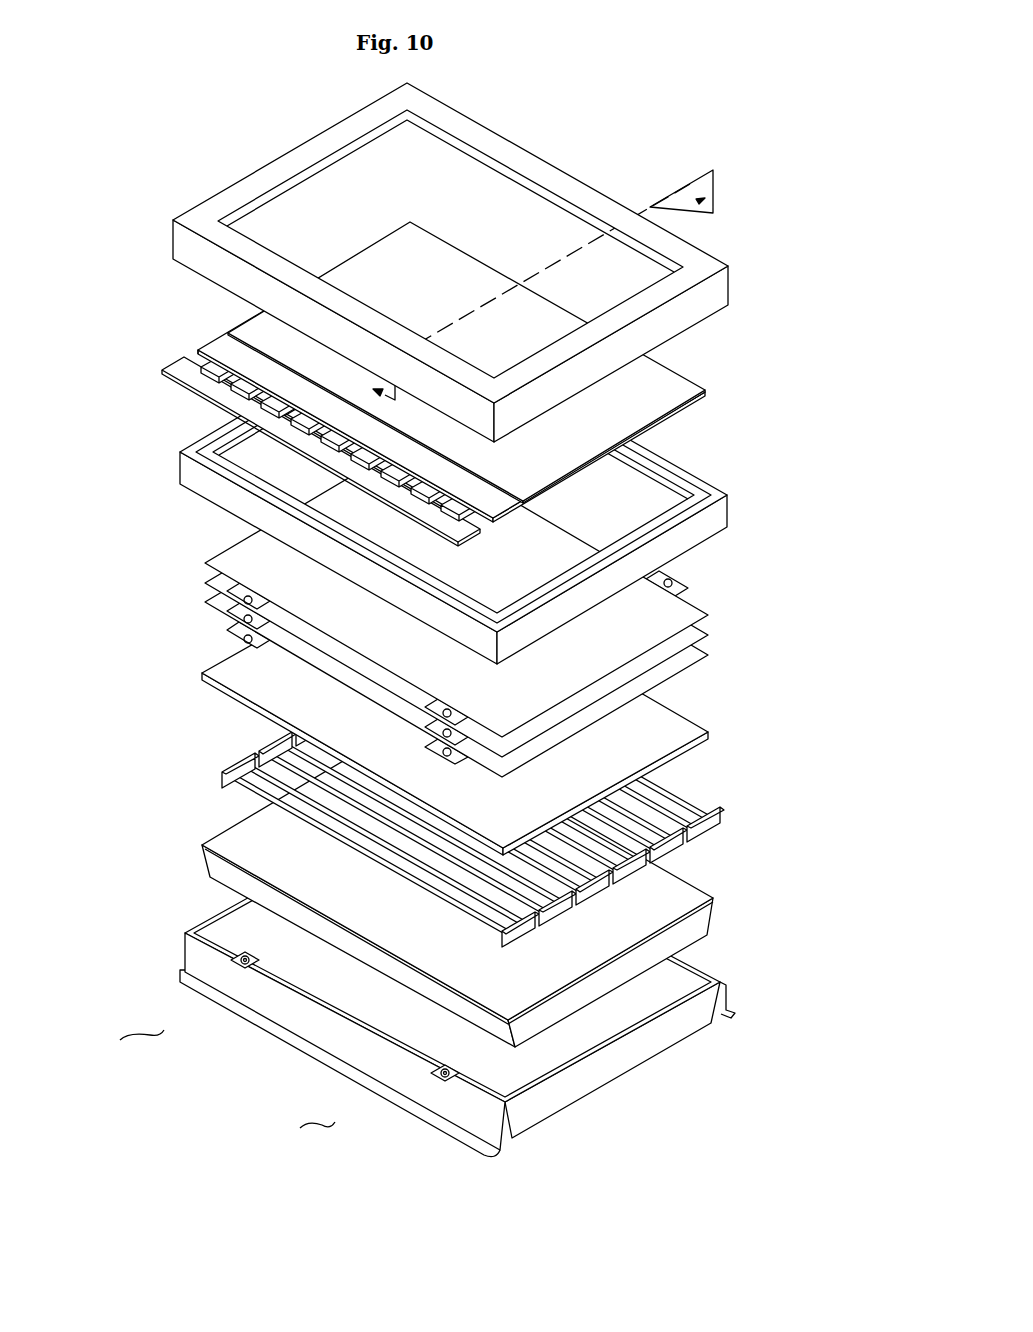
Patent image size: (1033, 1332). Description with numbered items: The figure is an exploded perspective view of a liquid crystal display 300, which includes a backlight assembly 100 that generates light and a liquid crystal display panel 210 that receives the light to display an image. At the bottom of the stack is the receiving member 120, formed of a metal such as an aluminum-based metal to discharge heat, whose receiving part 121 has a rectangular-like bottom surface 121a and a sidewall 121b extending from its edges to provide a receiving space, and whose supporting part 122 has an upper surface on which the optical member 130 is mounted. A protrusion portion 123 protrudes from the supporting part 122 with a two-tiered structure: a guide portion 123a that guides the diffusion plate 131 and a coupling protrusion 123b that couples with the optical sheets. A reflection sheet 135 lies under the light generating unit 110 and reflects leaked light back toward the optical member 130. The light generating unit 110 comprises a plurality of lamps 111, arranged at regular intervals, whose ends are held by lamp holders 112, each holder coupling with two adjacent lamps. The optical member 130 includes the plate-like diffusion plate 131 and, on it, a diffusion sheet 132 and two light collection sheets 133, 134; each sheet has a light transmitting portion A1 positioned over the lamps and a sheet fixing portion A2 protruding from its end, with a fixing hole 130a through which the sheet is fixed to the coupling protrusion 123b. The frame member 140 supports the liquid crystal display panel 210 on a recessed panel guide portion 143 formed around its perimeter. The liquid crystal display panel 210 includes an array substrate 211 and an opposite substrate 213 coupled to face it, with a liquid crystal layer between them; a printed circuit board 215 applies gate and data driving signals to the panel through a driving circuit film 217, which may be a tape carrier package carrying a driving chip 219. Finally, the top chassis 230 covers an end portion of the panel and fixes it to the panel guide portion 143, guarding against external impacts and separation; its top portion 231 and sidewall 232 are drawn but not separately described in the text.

The liquid crystal display 300 is at (429, 620).
The top chassis 230 is at (414, 262).
The top chassis top portion 231 is at (236, 200).
The top chassis sidewall 232 is at (140, 215).
The liquid crystal display panel 210 is at (406, 372).
The opposite substrate 213 is at (250, 327).
The array substrate 211 is at (213, 348).
The driving circuit film 217 is at (208, 362).
The printed circuit board 215 is at (331, 457).
The driving chip 219 is at (468, 497).
The frame member 140 is at (414, 489).
The panel guide portion 143 is at (694, 498).
The optical member 130 is at (432, 648).
The light collection sheet 134 is at (205, 566).
The light collection sheet 133 is at (205, 585).
The diffusion sheet 132 is at (205, 604).
The diffusion plate 131 is at (205, 676).
The fixing hole 130a is at (250, 598).
The sheet fixing portion A2 is at (444, 705).
The light transmitting portion A1 is at (510, 707).
The backlight assembly 100 is at (429, 736).
The light generating unit 110 is at (411, 797).
The lamp holder 112 is at (228, 768).
The lamp 111 is at (230, 781).
The reflection sheet 135 is at (278, 858).
The receiving member 120 is at (455, 985).
The receiving part 121 is at (498, 975).
The bottom surface 121a is at (655, 1000).
The sidewall 121b is at (625, 982).
The supporting part 122 is at (342, 1013).
The protrusion portion 123 is at (286, 1050).
The guide portion 123a is at (252, 970).
The coupling protrusion 123b is at (234, 962).